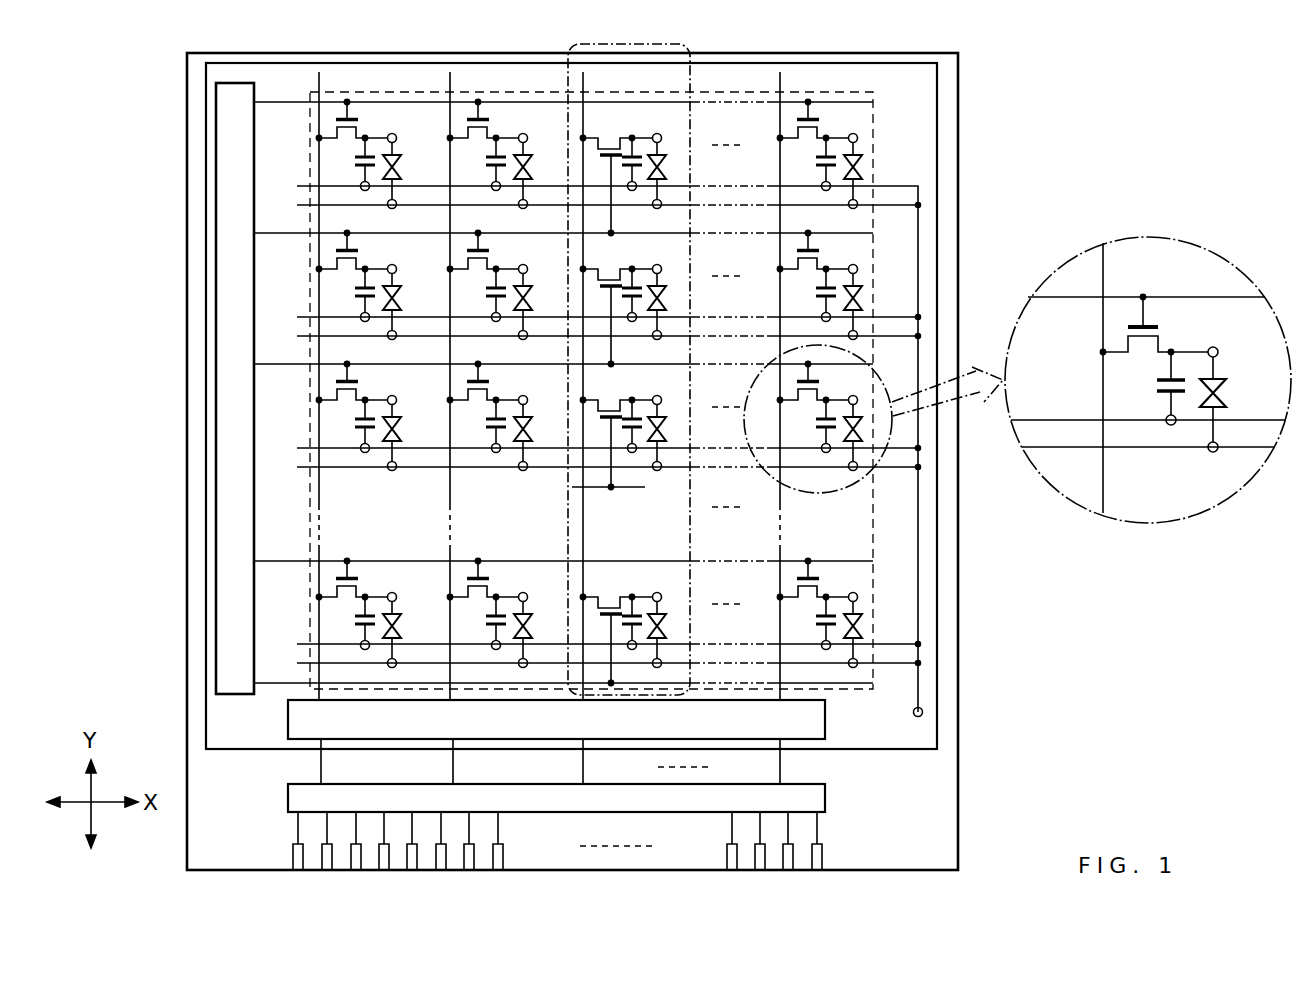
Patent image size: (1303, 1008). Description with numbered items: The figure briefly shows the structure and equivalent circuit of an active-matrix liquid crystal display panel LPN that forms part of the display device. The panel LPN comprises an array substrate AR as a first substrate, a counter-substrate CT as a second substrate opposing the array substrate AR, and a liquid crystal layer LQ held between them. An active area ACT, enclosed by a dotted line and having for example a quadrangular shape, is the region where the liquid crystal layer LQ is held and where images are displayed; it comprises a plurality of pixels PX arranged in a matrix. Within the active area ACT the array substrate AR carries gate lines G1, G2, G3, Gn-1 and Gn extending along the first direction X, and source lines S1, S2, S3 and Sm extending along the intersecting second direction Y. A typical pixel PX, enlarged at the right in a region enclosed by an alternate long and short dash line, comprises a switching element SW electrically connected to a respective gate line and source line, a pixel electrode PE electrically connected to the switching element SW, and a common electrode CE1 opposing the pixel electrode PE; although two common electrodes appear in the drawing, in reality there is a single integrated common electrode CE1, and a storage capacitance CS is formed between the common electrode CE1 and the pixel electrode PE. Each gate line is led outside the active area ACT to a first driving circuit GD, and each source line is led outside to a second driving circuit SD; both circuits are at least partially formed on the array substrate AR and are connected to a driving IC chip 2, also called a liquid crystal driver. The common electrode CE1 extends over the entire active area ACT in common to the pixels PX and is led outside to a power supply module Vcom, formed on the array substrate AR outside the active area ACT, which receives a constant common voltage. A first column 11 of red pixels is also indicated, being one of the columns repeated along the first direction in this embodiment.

The liquid crystal display panel LPN is at (972, 105).
The array substrate AR is at (958, 149).
The counter-substrate CT is at (938, 222).
The active area ACT is at (868, 268).
The pixel PX is at (1160, 237).
The source line S1 is at (321, 74).
The source line S2 is at (452, 74).
The source line S3 is at (585, 74).
The source line Sm is at (782, 74).
The gate line G1 is at (277, 104).
The gate line G2 is at (277, 235).
The gate line G3 is at (277, 366).
The gate line Gn-1 is at (287, 559).
The gate line Gn is at (283, 681).
The first driving circuit GD is at (236, 695).
The second driving circuit SD is at (826, 718).
The driving IC chip 2 is at (826, 795).
The first column 11 is at (692, 536).
The power supply module Vcom is at (923, 712).
The switching element SW is at (1126, 333).
The pixel electrode PE is at (1218, 347).
The storage capacitance CS is at (1157, 386).
The liquid crystal layer LQ is at (1228, 393).
The common electrode CE1 is at (1171, 425).